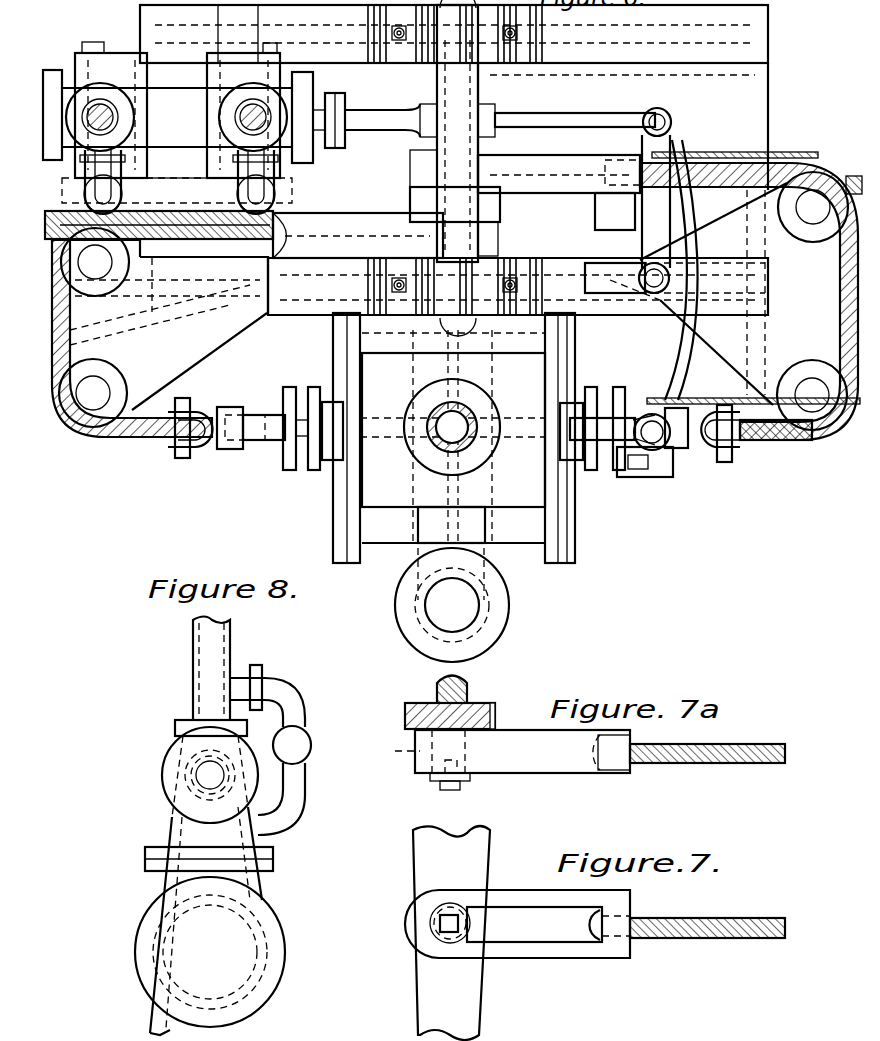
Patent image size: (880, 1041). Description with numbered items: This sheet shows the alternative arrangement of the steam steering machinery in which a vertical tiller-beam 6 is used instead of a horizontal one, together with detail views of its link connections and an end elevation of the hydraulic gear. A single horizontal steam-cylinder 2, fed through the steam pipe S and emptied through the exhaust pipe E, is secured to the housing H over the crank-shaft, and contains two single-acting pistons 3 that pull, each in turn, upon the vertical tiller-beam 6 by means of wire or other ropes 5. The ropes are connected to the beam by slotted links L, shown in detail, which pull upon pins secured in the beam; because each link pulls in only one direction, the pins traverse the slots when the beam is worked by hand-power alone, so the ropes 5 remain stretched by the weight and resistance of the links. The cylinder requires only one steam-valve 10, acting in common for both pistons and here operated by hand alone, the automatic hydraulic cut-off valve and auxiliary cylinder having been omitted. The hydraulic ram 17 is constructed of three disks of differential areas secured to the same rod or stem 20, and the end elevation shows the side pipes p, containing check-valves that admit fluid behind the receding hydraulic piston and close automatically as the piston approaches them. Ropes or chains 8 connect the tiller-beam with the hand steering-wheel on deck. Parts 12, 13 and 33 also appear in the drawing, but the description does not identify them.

In FIG. 6, the housing H is at (555, 66).
In FIG. 6, the slotted links L is at (456, 206).
In FIG. 7A, the slotted links L is at (522, 760).
In FIG. 7, the slotted links L is at (517, 924).
In FIG. 6, the hydraulic ram 17 is at (178, 91).
In FIG. 6, the connecting bar 13 is at (177, 175).
In FIG. 6, the side pipes p is at (85, 190).
In FIG. 8, the side pipes p is at (304, 692).
In FIG. 6, the ropes 5 is at (152, 432).
In FIG. 6, the rod 33 is at (775, 158).
In FIG. 6, the tiller-beam 6 is at (498, 205).
In FIG. 7A, the tiller-beam 6 is at (478, 708).
In FIG. 7, the tiller-beam 6 is at (451, 933).
In FIG. 6, the rod 12 is at (362, 114).
In FIG. 6, the rod or stem 20 is at (552, 128).
In FIG. 6, the steam-valve 10 is at (454, 438).
In FIG. 6, the pistons 3 is at (452, 418).
In FIG. 6, the ropes or chains 8 is at (452, 407).
In FIG. 6, the steam pipe S is at (452, 427).
In FIG. 6, the steam-cylinder 2 is at (522, 540).
In FIG. 6, the exhaust pipe E is at (452, 605).